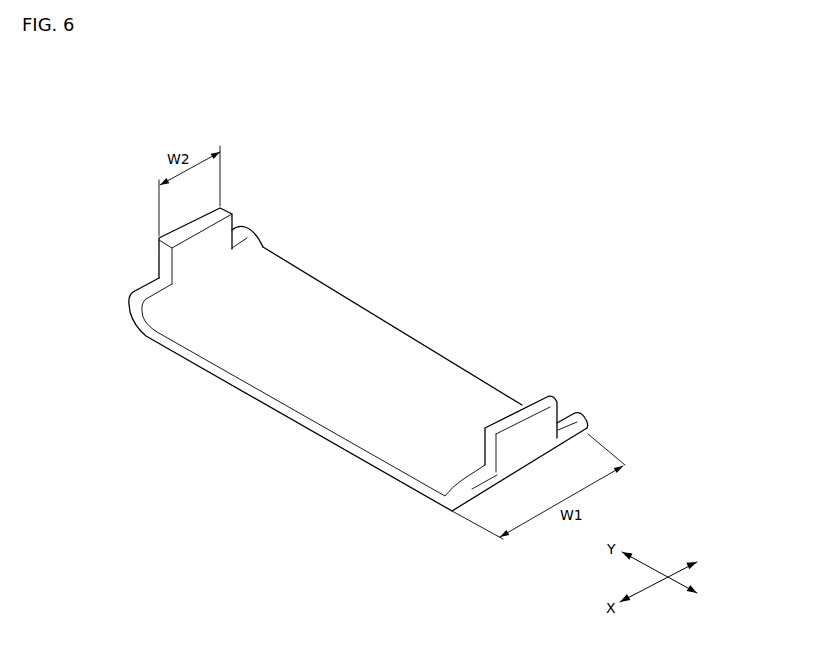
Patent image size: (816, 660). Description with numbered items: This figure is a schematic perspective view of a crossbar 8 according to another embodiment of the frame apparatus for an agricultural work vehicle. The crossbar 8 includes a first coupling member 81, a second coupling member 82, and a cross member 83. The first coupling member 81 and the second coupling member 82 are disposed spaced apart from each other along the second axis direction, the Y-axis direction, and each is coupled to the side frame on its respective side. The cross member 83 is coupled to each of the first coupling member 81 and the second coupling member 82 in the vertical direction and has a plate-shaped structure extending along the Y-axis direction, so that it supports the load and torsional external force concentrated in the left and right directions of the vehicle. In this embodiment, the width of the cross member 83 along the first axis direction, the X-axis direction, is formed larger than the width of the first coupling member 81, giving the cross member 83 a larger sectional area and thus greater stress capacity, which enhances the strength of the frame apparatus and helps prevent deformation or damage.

The crossbar 8 is at (154, 82).
The first coupling member 81 is at (523, 446).
The second coupling member 82 is at (222, 233).
The cross member 83 is at (383, 343).